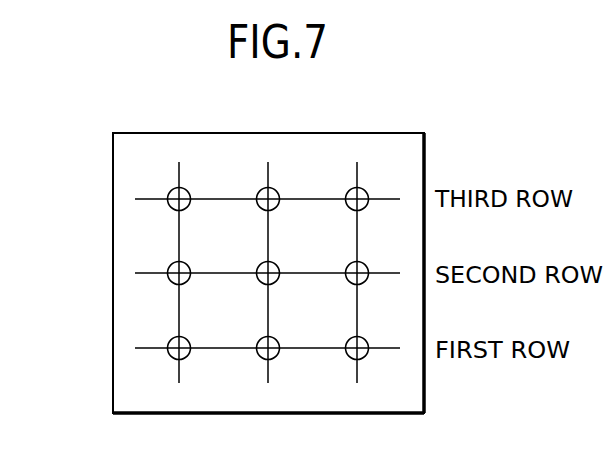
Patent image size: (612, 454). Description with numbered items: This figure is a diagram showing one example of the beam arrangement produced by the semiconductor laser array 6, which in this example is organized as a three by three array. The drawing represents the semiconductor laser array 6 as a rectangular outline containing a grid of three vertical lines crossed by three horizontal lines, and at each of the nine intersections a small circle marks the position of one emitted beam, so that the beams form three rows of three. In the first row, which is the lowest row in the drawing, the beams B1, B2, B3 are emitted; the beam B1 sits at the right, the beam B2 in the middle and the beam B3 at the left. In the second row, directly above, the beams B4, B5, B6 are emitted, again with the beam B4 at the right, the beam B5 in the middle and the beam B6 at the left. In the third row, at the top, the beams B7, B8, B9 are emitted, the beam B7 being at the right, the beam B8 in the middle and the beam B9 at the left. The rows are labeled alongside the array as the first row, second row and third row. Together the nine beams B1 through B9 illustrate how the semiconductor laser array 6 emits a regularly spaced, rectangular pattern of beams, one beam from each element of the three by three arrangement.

The semiconductor laser array 6 is at (268, 244).
The beam B1 is at (373, 360).
The beam B2 is at (285, 360).
The beam B3 is at (196, 360).
The beam B4 is at (373, 285).
The beam B5 is at (285, 285).
The beam B6 is at (196, 285).
The beam B7 is at (373, 213).
The beam B8 is at (285, 213).
The beam B9 is at (196, 213).